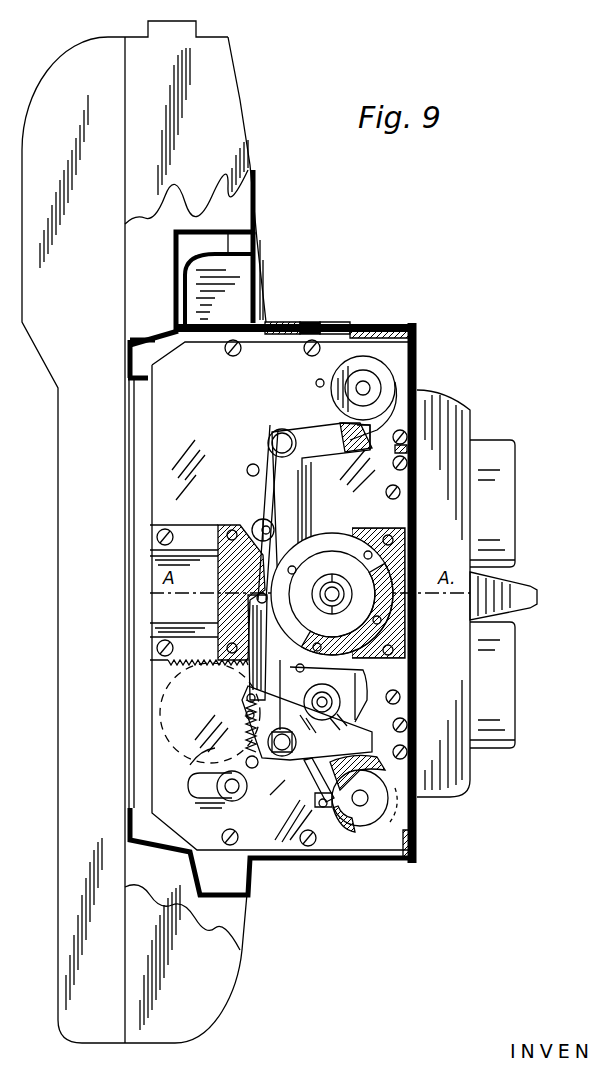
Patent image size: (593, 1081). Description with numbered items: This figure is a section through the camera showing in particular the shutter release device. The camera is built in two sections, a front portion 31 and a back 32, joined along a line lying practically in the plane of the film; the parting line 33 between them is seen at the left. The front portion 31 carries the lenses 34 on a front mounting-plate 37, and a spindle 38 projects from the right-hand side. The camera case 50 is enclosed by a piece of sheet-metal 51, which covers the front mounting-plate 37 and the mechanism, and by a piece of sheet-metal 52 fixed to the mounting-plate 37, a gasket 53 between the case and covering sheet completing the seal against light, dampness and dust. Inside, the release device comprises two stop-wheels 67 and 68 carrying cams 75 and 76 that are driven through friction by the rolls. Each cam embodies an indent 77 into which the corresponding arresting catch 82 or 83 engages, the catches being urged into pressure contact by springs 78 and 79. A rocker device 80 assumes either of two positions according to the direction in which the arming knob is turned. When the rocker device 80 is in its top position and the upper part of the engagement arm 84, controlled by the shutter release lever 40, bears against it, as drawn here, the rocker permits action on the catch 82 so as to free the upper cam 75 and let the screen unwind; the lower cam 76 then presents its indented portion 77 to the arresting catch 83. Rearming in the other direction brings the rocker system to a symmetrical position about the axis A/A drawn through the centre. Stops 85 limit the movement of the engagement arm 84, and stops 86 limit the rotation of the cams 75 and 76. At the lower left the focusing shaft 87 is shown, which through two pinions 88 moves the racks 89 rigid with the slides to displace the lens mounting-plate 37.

The front portion 31 is at (232, 104).
The back 32 is at (70, 70).
The casing parting line 33 is at (125, 78).
The lenses 34 is at (510, 480).
The front mounting-plate 37 is at (418, 365).
The conical spindle 38 is at (528, 586).
The shutter release lever 40 is at (320, 775).
The camera case 50 is at (315, 322).
The piece of sheet-metal 51 is at (348, 322).
The piece of sheet-metal 52 is at (383, 326).
The gasket 53 is at (283, 322).
The stop-wheel 67 is at (333, 368).
The stop-wheel 68 is at (316, 834).
The cam 75 is at (420, 385).
The cam 76 is at (318, 800).
The indent 77 is at (360, 452).
The spring 78 is at (262, 490).
The spring 79 is at (250, 740).
The rocker device 80 is at (297, 540).
The arresting catch 82 is at (287, 493).
The arresting catch 83 is at (283, 756).
The engagement arm 84 is at (262, 612).
The stops 85 is at (366, 678).
The stops 86 is at (318, 386).
The shaft 87 is at (240, 798).
The pinions 88 is at (190, 770).
The racks 89 is at (183, 665).